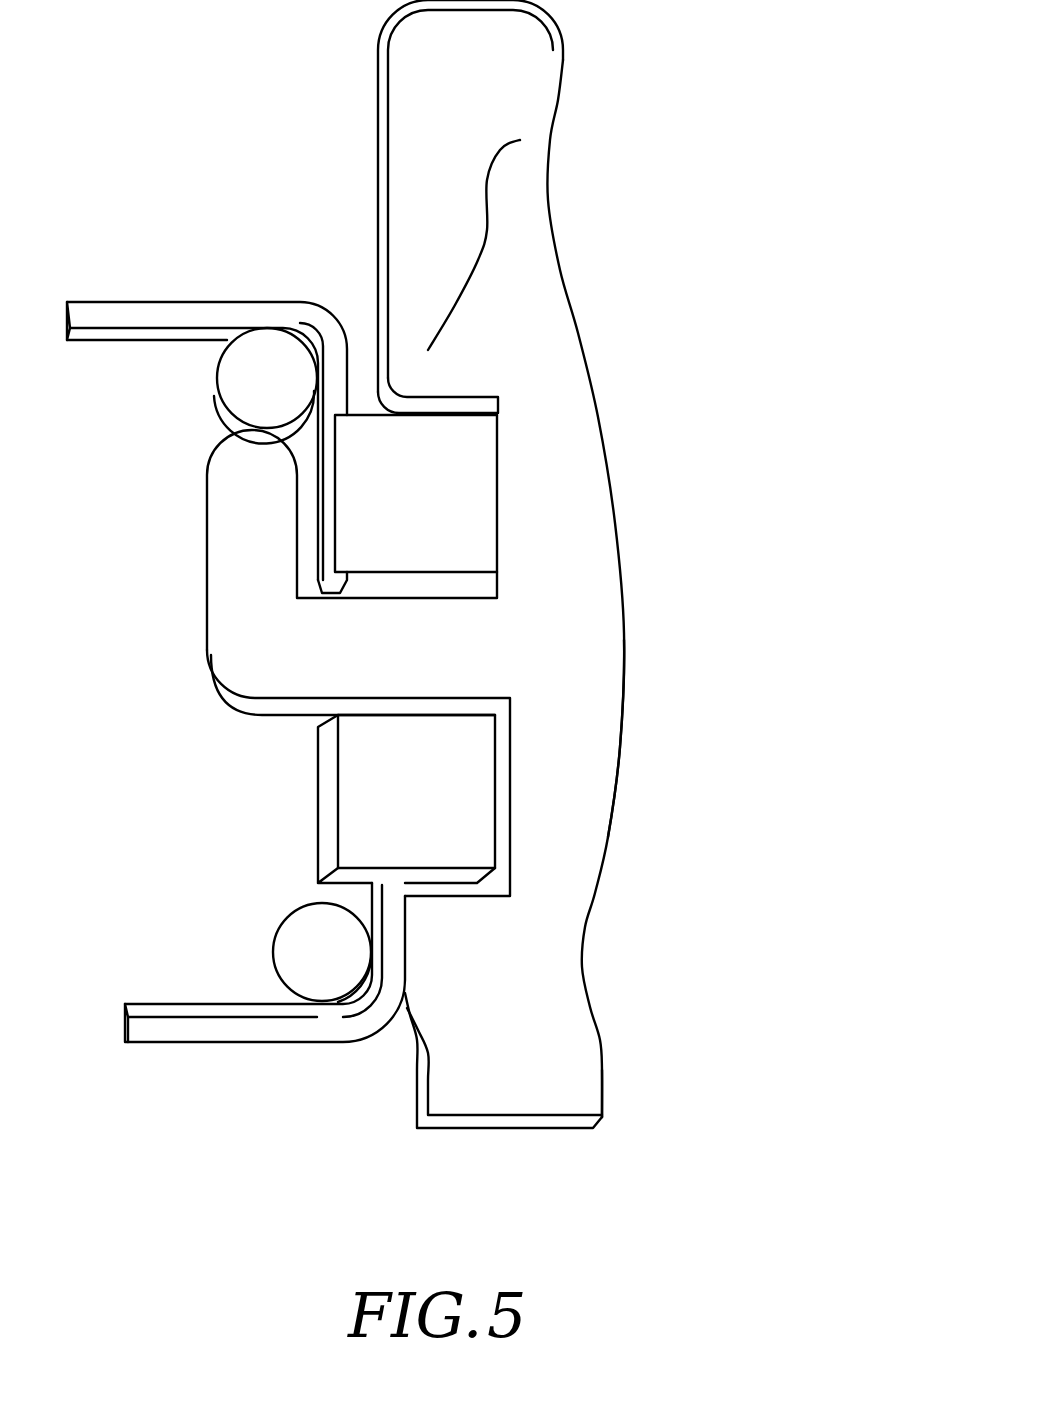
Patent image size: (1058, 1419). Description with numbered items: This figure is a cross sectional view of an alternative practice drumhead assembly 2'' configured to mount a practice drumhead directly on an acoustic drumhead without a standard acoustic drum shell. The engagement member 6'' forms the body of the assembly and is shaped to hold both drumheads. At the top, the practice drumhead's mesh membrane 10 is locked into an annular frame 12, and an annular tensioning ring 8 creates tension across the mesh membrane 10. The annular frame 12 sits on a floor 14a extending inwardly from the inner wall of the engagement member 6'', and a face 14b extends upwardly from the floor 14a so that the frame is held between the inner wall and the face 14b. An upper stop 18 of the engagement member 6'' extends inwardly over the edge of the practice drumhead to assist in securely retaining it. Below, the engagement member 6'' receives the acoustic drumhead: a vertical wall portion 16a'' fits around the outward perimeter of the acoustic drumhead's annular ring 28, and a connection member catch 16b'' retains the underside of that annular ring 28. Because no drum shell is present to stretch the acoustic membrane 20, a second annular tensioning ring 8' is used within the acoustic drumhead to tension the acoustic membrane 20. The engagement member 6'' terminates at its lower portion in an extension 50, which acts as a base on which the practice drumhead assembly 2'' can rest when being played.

The practice drumhead assembly 2'' is at (843, 116).
The engagement member 6'' is at (529, 558).
The annular tensioning ring 8 is at (218, 386).
The second annular tensioning ring 8' is at (260, 933).
The mesh membrane 10 is at (178, 300).
The annular frame 12 is at (453, 502).
The floor 14a is at (357, 653).
The face 14b is at (257, 557).
The vertical wall portion 16a'' is at (667, 738).
The connection member catch 16b'' is at (522, 1062).
The upper stop 18 is at (520, 140).
The acoustic membrane 20 is at (238, 1045).
The annular ring 28 is at (435, 807).
The extension 50 is at (562, 1068).